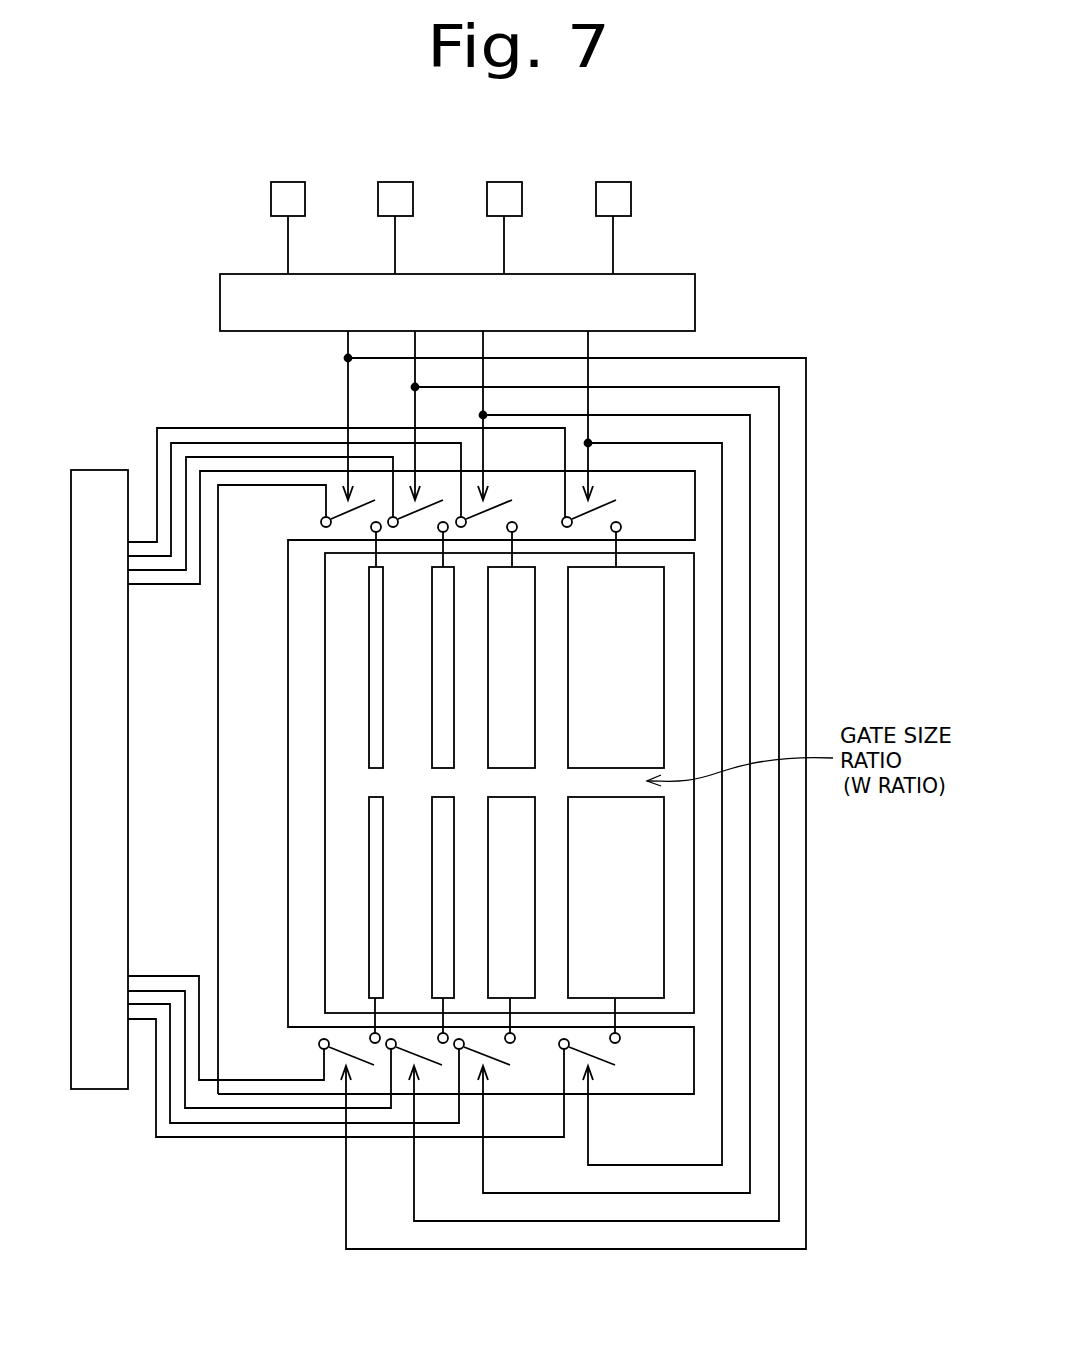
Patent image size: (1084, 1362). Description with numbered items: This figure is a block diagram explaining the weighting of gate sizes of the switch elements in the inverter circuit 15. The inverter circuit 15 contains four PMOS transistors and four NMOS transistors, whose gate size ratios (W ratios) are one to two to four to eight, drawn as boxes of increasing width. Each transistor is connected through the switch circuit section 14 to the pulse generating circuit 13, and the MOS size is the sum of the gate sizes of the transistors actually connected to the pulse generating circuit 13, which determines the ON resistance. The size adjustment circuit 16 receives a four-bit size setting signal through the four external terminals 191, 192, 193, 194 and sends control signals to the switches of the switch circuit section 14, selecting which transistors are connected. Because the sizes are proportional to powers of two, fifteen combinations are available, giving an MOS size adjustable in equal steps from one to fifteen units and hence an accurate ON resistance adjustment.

The pulse generating circuit 13 is at (100, 470).
The switch circuit section 14 is at (218, 780).
The inverter circuit 15 is at (695, 603).
The size adjustment circuit 16 is at (220, 303).
The external terminal 191 is at (288, 181).
The external terminal 192 is at (395, 181).
The external terminal 193 is at (504, 181).
The external terminal 194 is at (613, 181).